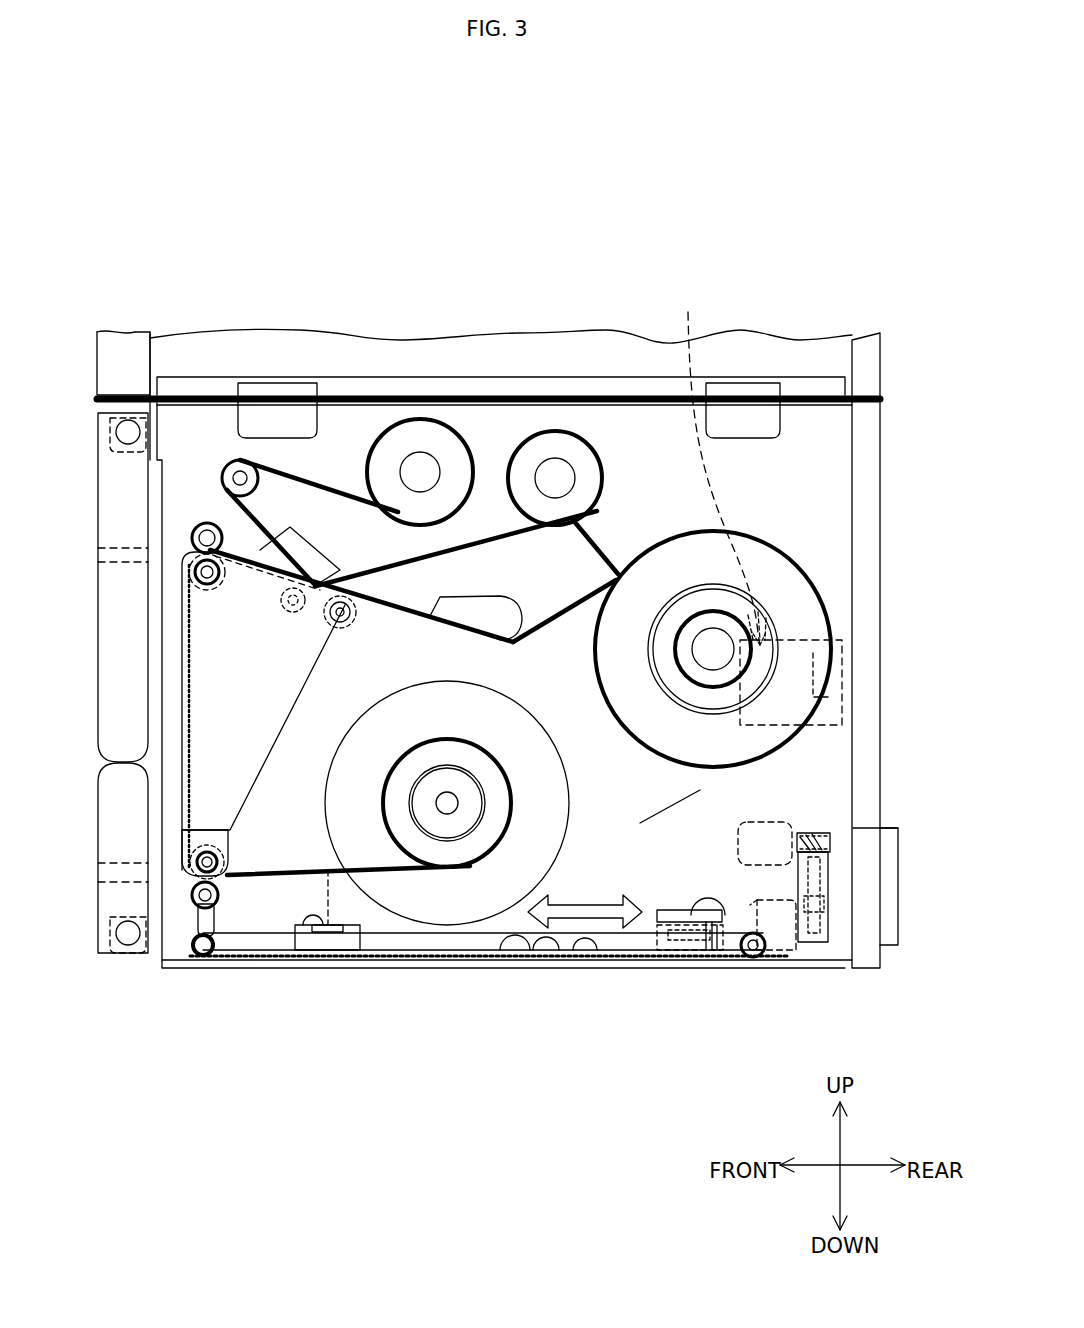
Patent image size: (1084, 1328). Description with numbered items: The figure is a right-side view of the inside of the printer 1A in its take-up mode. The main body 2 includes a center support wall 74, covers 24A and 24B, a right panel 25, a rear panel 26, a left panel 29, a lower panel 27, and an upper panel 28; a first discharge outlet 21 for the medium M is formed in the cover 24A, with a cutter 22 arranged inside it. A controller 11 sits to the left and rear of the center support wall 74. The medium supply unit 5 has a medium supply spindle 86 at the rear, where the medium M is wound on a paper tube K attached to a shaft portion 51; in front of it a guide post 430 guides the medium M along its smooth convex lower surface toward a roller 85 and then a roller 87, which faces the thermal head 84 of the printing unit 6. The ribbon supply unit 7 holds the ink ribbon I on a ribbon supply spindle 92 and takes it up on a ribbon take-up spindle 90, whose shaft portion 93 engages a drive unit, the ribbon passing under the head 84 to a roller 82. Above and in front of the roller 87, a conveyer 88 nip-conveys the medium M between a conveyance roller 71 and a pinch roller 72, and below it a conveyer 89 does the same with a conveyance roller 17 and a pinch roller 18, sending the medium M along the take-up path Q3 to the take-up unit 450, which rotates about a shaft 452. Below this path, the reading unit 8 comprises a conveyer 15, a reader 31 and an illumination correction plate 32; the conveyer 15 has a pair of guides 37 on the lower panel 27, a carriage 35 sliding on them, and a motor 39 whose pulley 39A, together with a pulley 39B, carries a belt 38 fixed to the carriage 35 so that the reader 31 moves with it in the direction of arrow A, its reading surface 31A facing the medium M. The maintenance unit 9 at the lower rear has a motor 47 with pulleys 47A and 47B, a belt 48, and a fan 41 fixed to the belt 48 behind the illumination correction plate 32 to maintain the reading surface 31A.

The printer 1A is at (495, 172).
The main body 2 is at (765, 293).
The medium supply unit 5 is at (800, 535).
The printing unit 6 is at (292, 520).
The ribbon supply unit 7 is at (512, 408).
The reading unit 8 is at (440, 968).
The maintenance unit 9 is at (858, 836).
The controller 11 is at (719, 466).
The conveyer 15 is at (412, 960).
The conveyance roller 17 is at (192, 872).
The pinch roller 18 is at (198, 878).
The first discharge outlet 21 is at (98, 565).
The cutter 22 is at (98, 548).
The cover 24A is at (125, 642).
The cover 24B is at (125, 902).
The right panel 25 is at (598, 356).
The rear panel 26 is at (853, 568).
The lower panel 27 is at (758, 950).
The upper panel 28 is at (790, 390).
The left panel 29 is at (790, 458).
The reader 31 is at (335, 940).
The reading surface 31A is at (324, 940).
The illumination correction plate 32 is at (718, 940).
The carriage 35 is at (313, 920).
The guides 37 is at (520, 962).
The belt 38 is at (582, 945).
The motor 39 is at (825, 905).
The pulley 39A is at (768, 910).
The pulley 39B is at (205, 940).
The fan 41 is at (820, 876).
The motor 47 is at (765, 842).
The pulley 47A is at (820, 845).
The pulley 47B is at (812, 850).
The belt 48 is at (817, 840).
The shaft portion 51 is at (713, 649).
The conveyance roller 71 is at (205, 528).
The pinch roller 72 is at (198, 578).
The center support wall 74 is at (640, 823).
The roller 82 is at (240, 470).
The thermal head 84 is at (298, 588).
The roller 85 is at (342, 598).
The medium supply spindle 86 is at (785, 603).
The roller 87 is at (297, 615).
The conveyer 88 is at (182, 540).
The conveyer 89 is at (232, 918).
The ribbon take-up spindle 90 is at (428, 416).
The ribbon supply spindle 92 is at (585, 436).
The shaft portion 93 is at (418, 470).
The guide post 430 is at (465, 615).
The take-up unit 450 is at (458, 830).
The shaft 452 is at (447, 805).
The arrow A is at (597, 893).
The paper tube K is at (760, 700).
The medium M is at (192, 668).
The ink ribbon I is at (510, 538).
The take-up path Q3 is at (150, 838).